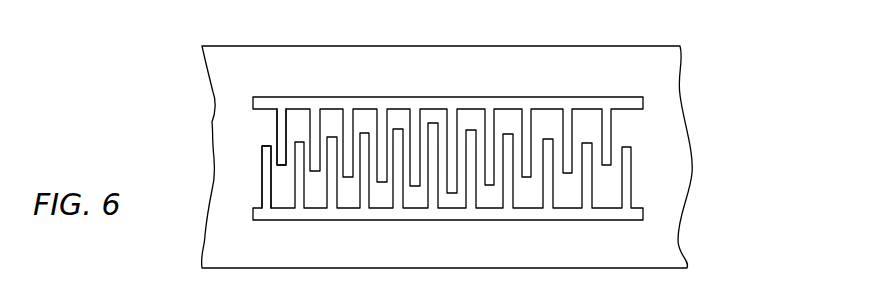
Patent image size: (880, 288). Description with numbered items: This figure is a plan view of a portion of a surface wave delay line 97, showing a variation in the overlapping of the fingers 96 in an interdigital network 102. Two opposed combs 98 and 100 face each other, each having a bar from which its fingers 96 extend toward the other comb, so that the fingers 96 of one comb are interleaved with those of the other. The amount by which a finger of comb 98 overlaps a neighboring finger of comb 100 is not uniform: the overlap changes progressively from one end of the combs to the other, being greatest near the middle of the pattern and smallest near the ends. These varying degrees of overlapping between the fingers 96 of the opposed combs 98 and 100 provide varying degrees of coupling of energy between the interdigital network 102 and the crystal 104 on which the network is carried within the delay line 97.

The fingers 96 is at (282, 125).
The delay line 97 is at (175, 136).
The comb 98 is at (442, 103).
The comb 100 is at (433, 212).
The interdigital network 102 is at (568, 87).
The crystal 104 is at (636, 251).